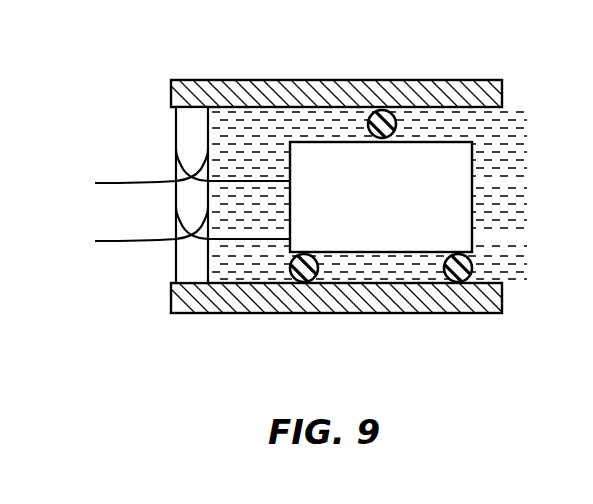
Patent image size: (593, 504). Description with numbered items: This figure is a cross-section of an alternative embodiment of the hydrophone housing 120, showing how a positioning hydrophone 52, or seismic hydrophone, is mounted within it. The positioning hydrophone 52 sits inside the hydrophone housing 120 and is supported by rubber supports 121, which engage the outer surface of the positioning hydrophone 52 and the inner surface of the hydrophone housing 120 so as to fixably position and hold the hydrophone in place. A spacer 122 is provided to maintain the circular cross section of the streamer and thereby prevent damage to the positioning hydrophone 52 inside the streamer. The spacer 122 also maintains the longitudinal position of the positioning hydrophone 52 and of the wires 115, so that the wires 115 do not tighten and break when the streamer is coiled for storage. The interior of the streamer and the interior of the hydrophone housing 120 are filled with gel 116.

The positioning hydrophone 52 is at (338, 163).
The wires 115 is at (129, 245).
The gel 116 is at (457, 126).
The hydrophone housing 120 is at (423, 92).
The rubber supports 121 is at (307, 283).
The spacer 122 is at (190, 136).